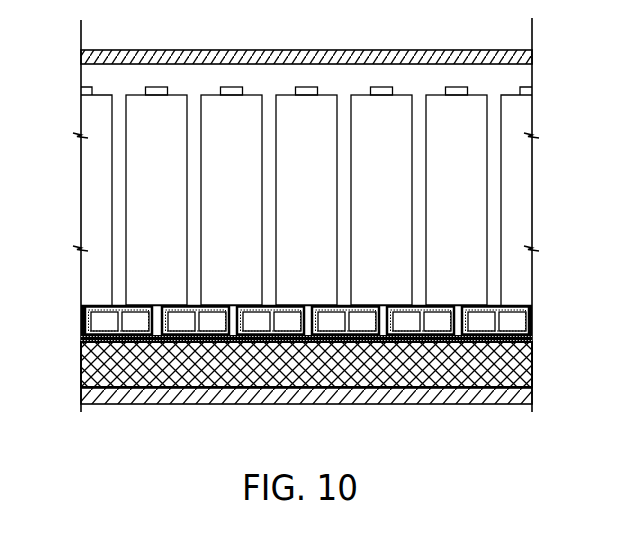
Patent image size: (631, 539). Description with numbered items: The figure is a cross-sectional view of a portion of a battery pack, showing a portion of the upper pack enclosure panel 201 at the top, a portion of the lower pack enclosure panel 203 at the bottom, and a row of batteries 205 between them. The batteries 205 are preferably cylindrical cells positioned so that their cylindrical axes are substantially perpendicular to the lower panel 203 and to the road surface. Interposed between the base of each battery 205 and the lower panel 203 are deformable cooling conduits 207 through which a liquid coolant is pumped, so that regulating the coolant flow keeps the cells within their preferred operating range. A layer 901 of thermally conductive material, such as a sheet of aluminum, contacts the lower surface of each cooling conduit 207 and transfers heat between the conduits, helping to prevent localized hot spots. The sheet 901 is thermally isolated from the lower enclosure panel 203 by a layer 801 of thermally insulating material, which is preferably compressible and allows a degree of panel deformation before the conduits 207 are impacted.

The upper pack enclosure panel 201 is at (203, 50).
The lower pack enclosure panel 203 is at (353, 402).
The batteries 205 is at (178, 204).
The cooling conduits 207 is at (193, 305).
The layer of thermally insulating material 801 is at (82, 372).
The layer of thermally conductive material 901 is at (533, 341).